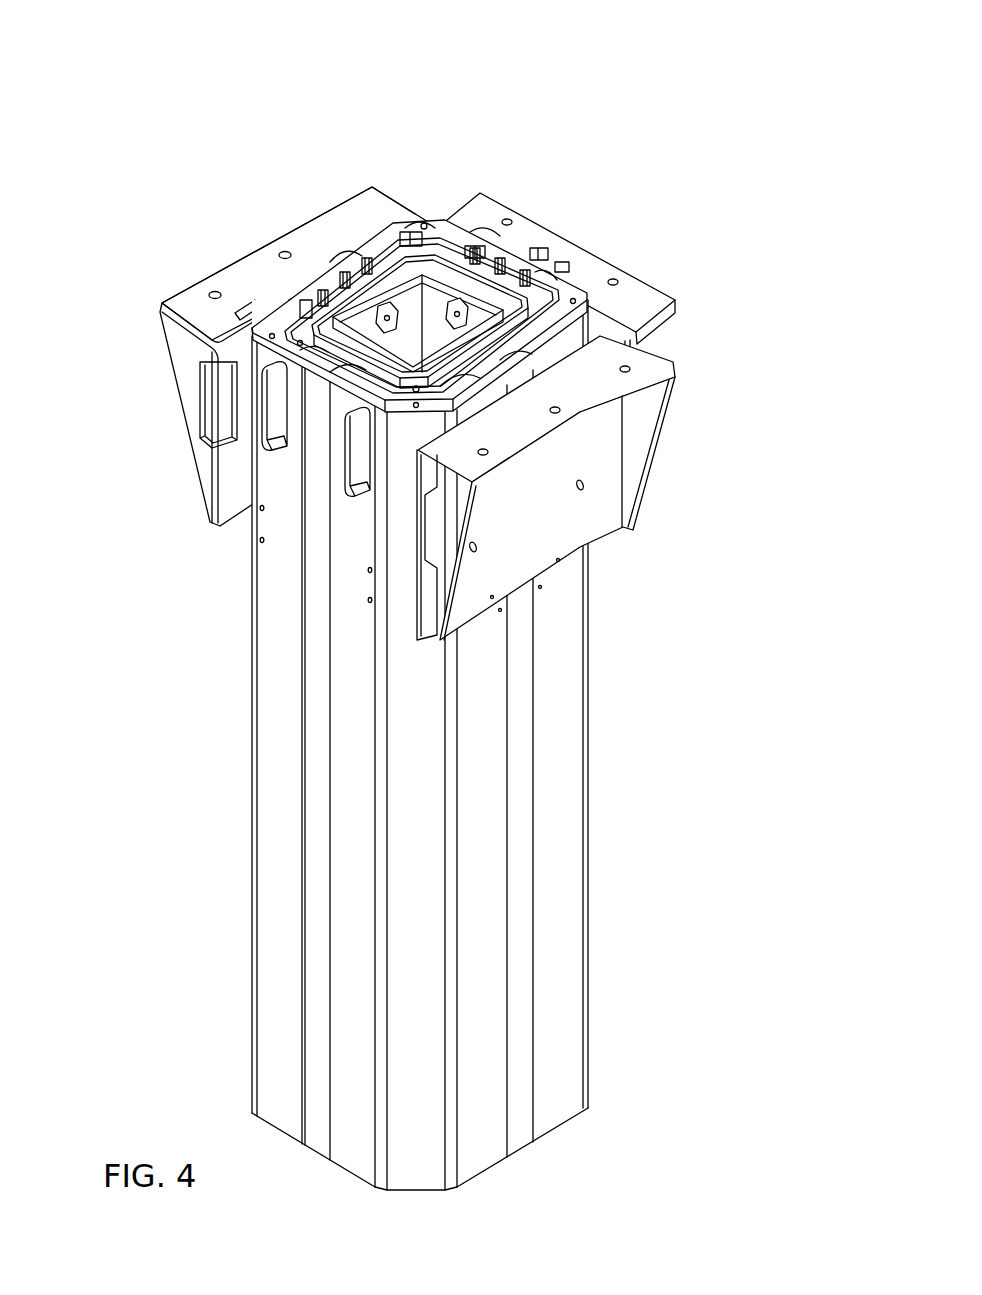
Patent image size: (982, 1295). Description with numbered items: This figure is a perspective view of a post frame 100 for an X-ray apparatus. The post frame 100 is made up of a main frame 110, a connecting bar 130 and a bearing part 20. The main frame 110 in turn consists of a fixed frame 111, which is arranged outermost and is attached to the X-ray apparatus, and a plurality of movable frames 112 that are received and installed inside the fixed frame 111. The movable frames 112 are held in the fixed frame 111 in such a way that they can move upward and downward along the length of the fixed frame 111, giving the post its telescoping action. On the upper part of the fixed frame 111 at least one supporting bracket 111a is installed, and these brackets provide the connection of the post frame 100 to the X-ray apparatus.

The post frame 100 is at (148, 164).
The bearing part 20 is at (353, 212).
The main frame 110 is at (488, 218).
The fixed frame 111 is at (413, 215).
The supporting bracket 111a is at (655, 298).
The movable frame 112 is at (520, 238).
The connecting bar 130 is at (545, 254).